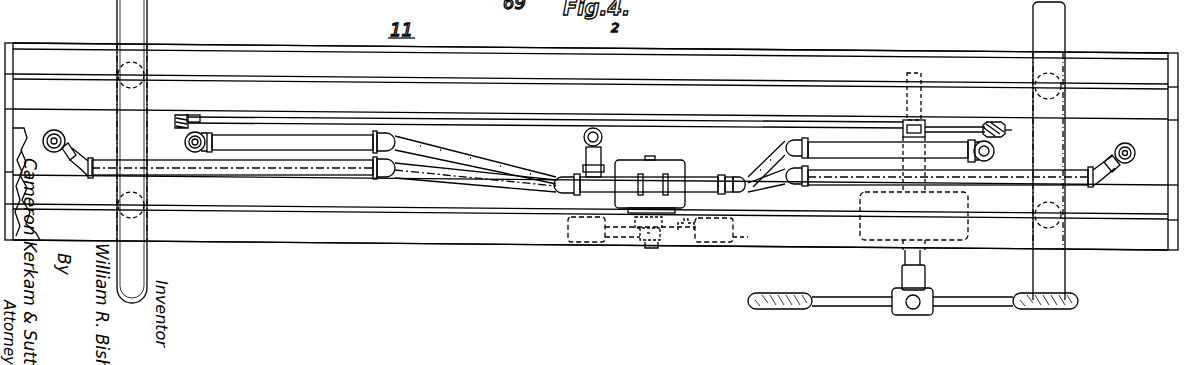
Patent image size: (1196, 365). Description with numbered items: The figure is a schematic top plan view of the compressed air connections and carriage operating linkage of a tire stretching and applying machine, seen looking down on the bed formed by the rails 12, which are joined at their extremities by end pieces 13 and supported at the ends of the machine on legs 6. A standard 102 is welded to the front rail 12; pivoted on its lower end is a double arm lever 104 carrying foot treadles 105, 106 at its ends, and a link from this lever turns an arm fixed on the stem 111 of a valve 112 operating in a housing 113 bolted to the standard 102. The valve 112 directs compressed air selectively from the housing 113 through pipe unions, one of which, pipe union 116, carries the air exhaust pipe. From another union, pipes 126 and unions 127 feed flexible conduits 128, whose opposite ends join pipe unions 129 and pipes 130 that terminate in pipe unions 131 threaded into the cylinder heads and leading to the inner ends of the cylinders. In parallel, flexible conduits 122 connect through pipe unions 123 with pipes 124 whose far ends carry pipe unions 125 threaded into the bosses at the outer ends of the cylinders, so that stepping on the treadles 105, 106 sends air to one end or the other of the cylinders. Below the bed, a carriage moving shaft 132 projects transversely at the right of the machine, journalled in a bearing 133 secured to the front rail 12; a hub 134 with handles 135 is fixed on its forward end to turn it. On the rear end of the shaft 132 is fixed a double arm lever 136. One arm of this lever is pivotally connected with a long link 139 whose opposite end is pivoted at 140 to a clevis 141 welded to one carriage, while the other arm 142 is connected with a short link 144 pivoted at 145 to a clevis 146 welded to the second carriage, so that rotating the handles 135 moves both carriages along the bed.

The legs 6 is at (145, 20).
The rails 12 is at (232, 47).
The end pieces 13 is at (38, 118).
The standard 102 is at (626, 242).
The double arm lever 104 is at (678, 244).
The foot treadle 105 is at (759, 236).
The foot treadle 106 is at (566, 242).
The valve stem 111 is at (651, 250).
The valve 112 is at (648, 162).
The valve housing 113 is at (677, 165).
The pipe union 116 is at (583, 152).
The flexible conduits 122 is at (472, 181).
The pipe unions 123 is at (392, 178).
The pipes 124 is at (246, 176).
The pipe unions 125 is at (76, 177).
The pipes 126 is at (597, 184).
The unions 127 is at (556, 190).
The flexible conduits 128 is at (460, 153).
The pipe unions 129 is at (386, 133).
The pipes 130 is at (314, 137).
The pipe unions 131 is at (209, 133).
The carriage moving shaft 132 is at (920, 260).
The bearing 133 is at (883, 233).
The hub 134 is at (901, 313).
The handles 135 is at (783, 310).
The double arm lever 136 is at (920, 130).
The long link 139 is at (533, 118).
The pivot 140 is at (194, 115).
The clevis 141 is at (178, 114).
The arm 142 is at (914, 124).
The short link 144 is at (967, 126).
The pivot 145 is at (1006, 132).
The clevis 146 is at (1001, 126).